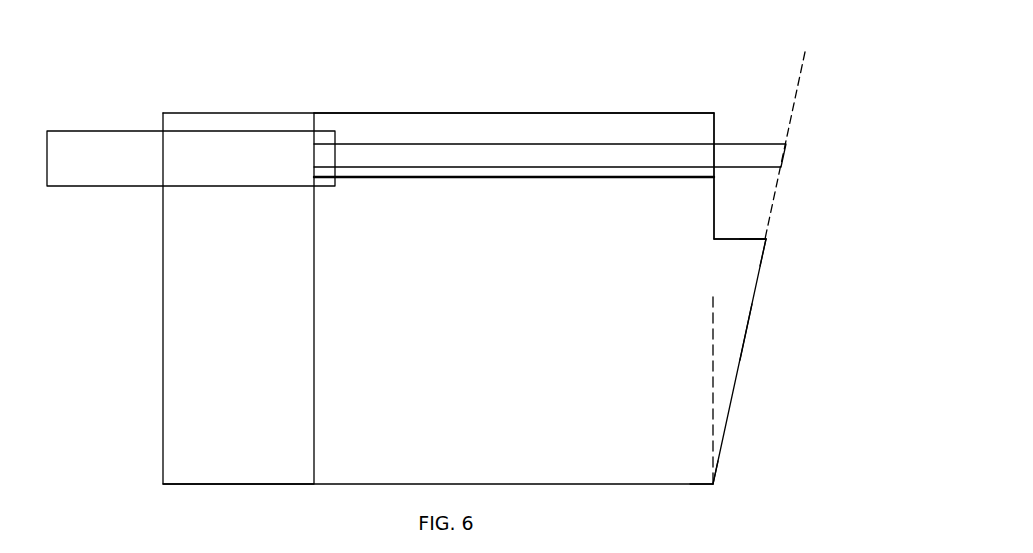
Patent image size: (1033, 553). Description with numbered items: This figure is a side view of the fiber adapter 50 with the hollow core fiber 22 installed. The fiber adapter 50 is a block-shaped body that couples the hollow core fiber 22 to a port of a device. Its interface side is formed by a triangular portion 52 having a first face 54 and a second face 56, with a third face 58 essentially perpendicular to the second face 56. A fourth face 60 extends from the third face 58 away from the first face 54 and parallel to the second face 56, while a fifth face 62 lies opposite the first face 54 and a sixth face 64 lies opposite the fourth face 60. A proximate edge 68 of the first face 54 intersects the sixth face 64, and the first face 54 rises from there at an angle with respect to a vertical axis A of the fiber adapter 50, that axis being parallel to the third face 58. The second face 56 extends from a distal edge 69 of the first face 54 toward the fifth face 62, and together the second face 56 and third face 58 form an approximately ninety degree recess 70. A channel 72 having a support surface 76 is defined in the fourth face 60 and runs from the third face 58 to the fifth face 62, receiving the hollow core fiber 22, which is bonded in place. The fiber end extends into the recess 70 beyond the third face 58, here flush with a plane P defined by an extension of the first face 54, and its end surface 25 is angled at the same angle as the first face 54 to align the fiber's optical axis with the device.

The fiber adapter 50 is at (134, 68).
The hollow core fiber 22 is at (93, 131).
The fifth (rear) face 62 is at (163, 300).
The sixth (bottom) face 64 is at (352, 485).
The fourth (slotted) face 60 is at (550, 113).
The channel 72 is at (442, 128).
The support surface 76 is at (583, 177).
The end surface 25 is at (783, 147).
The third (extension) face 58 is at (667, 178).
The second (recess) face 56 is at (728, 240).
The distal edge 69 is at (765, 239).
The triangular portion 52 is at (742, 290).
The first (attachment) face 54 is at (752, 307).
The vertical axis A is at (713, 415).
The proximate edge 68 is at (713, 483).
The plane P is at (800, 82).
The recess 70 is at (735, 105).